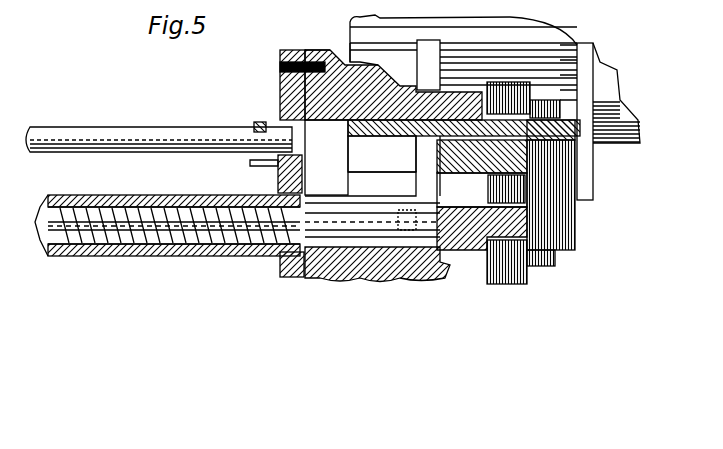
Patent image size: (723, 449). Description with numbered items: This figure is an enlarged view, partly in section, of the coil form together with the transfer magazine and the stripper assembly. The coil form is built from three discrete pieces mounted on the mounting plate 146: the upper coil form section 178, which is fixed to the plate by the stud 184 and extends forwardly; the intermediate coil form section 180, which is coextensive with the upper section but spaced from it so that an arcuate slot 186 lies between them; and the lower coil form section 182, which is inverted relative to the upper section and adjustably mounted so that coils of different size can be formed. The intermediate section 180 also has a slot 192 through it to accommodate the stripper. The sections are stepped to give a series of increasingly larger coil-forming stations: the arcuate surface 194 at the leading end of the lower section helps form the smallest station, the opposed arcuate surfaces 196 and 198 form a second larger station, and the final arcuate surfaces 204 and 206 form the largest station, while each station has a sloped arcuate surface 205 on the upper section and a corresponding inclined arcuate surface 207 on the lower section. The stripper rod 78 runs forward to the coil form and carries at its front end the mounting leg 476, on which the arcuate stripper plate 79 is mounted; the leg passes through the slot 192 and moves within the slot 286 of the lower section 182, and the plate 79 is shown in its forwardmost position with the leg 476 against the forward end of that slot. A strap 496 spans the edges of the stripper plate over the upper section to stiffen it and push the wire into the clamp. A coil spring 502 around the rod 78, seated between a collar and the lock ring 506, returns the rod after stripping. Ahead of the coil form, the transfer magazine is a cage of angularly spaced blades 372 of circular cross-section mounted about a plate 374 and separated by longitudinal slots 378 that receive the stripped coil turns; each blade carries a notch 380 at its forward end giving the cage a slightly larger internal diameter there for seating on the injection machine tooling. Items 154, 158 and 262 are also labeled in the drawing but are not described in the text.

The rod 154 is at (98, 127).
The collar 158 is at (256, 123).
The stripper rod 78 is at (104, 210).
The coil spring 502 is at (148, 207).
The lock ring 506 is at (275, 191).
The slot 286 is at (280, 264).
The mounting plate 146 is at (280, 88).
The stud 184 is at (280, 66).
The upper coil form section 178 is at (316, 47).
The arcuate slot 186 is at (334, 152).
The notch 380 is at (464, 146).
The intermediate coil form section 180 is at (372, 173).
The slot 192 is at (404, 170).
The lower housing 262 is at (377, 242).
The mounting leg 476 is at (436, 200).
The stripper plate 79 is at (498, 188).
The arcuate surface 198 is at (452, 250).
The inclined arcuate surface 207 is at (482, 252).
The arcuate surface 196 is at (468, 100).
The lower coil form section 182 is at (533, 222).
The arcuate surface 194 is at (532, 255).
The arcuate surface 204 is at (345, 62).
The sloped arcuate surface 205 is at (362, 62).
The arcuate surface 206 is at (400, 84).
The strap 496 is at (469, 16).
The blade 372 is at (560, 40).
The slot 378 is at (583, 99).
The plate 374 is at (640, 140).